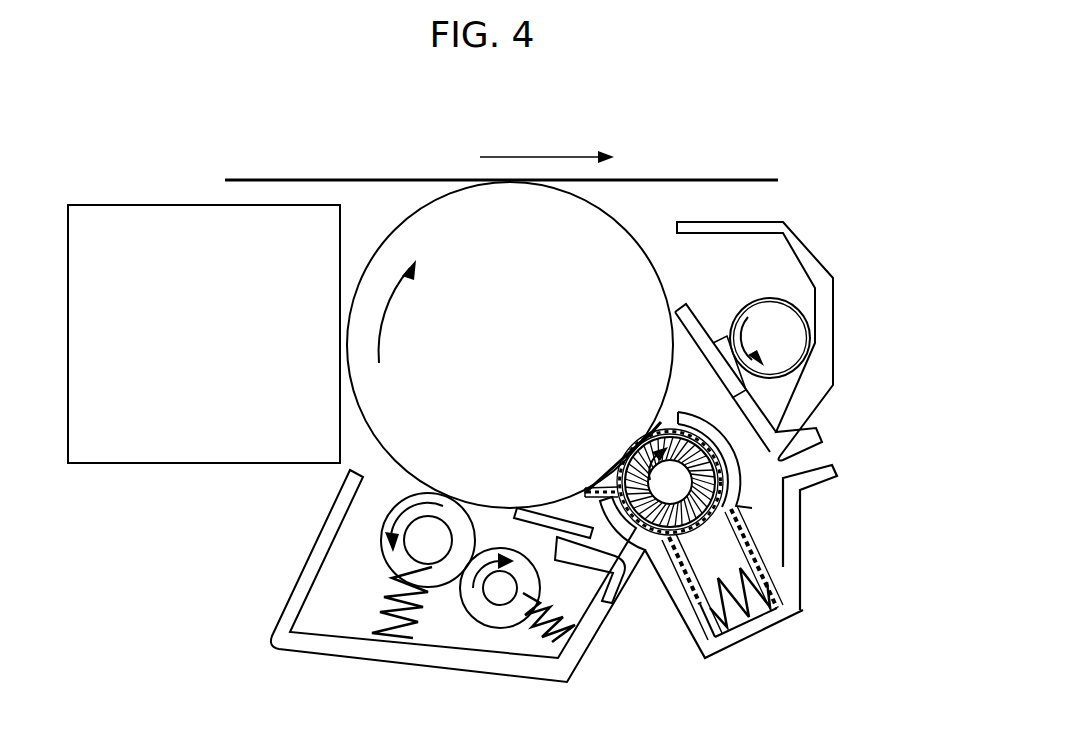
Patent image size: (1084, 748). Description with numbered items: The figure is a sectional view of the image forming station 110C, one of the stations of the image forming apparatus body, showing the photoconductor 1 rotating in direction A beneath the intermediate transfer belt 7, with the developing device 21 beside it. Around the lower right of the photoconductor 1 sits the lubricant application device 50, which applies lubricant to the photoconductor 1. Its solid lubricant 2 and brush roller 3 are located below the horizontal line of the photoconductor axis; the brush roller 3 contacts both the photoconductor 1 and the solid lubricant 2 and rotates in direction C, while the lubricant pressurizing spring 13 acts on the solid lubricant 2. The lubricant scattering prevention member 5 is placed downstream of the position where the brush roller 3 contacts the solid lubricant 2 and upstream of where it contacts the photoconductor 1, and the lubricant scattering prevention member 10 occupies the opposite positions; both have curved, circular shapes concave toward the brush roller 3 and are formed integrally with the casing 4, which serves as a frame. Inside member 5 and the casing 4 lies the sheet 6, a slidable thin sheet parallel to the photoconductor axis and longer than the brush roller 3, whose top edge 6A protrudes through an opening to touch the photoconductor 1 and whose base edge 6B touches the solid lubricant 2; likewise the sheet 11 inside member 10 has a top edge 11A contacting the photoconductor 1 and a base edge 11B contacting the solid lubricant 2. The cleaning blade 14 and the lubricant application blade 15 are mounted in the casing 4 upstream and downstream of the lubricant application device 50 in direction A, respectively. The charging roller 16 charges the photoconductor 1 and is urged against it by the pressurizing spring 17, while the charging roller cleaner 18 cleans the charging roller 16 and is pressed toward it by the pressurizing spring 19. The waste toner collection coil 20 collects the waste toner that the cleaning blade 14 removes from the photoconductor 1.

The photoconductor 1 is at (521, 356).
The solid lubricant 2 is at (722, 528).
The brush roller 3 is at (630, 470).
The casing 4 is at (800, 238).
The lubricant scattering prevention member 5 is at (600, 524).
The sheet 6 is at (672, 590).
The top edge 6A is at (588, 487).
The base edge 6B is at (696, 620).
The intermediate transfer belt 7 is at (345, 178).
The lubricant scattering prevention member 10 is at (700, 411).
The sheet 11 is at (660, 420).
The top edge 11A is at (652, 428).
The base edge 11B is at (795, 568).
The lubricant pressurizing spring 13 is at (775, 612).
The cleaning blade 14 is at (708, 297).
The lubricant application blade 15 is at (532, 522).
The charging roller 16 is at (384, 556).
The pressurizing spring 17 is at (378, 612).
The charging roller cleaner 18 is at (470, 606).
The pressurizing spring 19 is at (546, 656).
The waste toner collection coil 20 is at (776, 297).
The developing device 21 is at (188, 464).
The lubricant application device 50 is at (850, 620).
The image forming station 110C is at (758, 101).